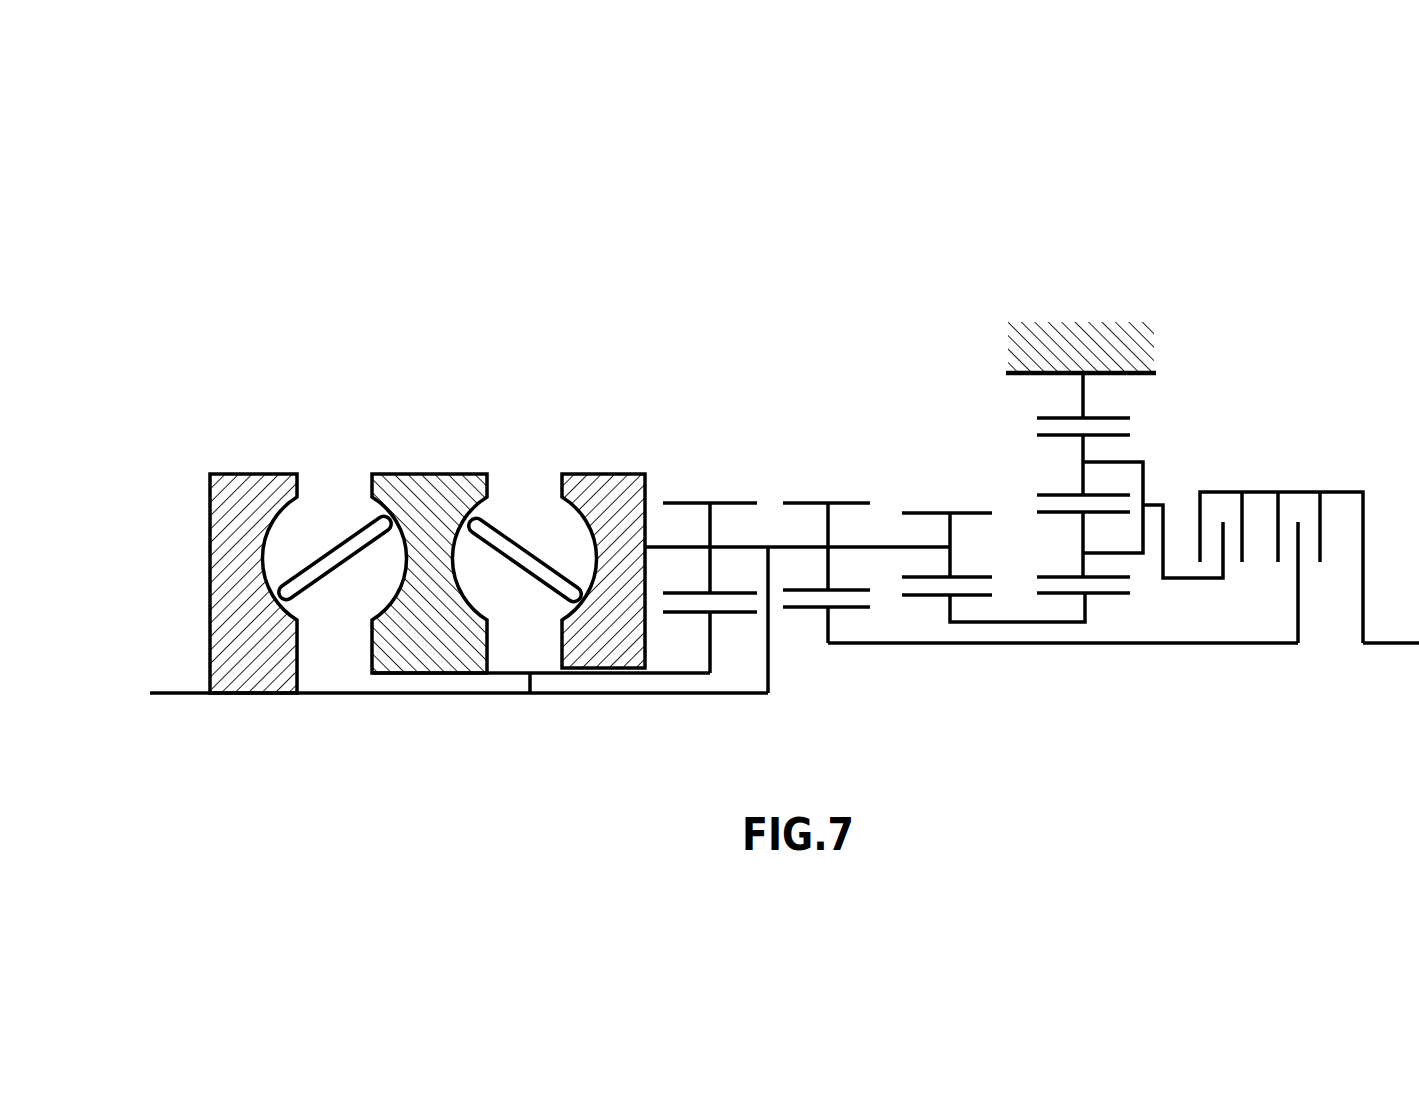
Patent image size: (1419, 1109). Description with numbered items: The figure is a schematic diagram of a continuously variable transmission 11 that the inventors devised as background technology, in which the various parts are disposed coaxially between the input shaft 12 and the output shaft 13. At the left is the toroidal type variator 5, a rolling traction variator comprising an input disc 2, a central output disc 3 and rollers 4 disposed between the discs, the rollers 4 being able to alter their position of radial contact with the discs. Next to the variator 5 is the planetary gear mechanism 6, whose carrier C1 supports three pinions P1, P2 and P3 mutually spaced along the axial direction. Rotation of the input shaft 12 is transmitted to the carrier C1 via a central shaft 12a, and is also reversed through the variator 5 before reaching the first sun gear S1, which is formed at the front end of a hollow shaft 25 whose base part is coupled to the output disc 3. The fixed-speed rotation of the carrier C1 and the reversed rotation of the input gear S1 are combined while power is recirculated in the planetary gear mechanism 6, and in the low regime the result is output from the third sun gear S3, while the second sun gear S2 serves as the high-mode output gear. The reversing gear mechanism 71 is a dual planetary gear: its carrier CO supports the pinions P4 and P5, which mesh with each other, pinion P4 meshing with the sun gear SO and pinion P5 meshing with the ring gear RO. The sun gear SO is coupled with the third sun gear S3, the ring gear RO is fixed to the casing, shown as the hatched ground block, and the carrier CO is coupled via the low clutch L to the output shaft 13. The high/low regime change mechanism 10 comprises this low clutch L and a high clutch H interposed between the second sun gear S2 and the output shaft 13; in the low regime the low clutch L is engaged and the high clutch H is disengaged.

The input disc 2 is at (258, 488).
The output disc 3 is at (427, 488).
The rollers 4 is at (358, 546).
The toroidal type variator 5 is at (614, 356).
The planetary gear mechanism 6 is at (828, 396).
The high/low regime change mechanism 10 is at (1281, 498).
The continuously variable transmission 11 is at (715, 325).
The input shaft 12 is at (183, 692).
The central shaft 12a is at (417, 694).
The output shaft 13 is at (1397, 642).
The hollow shaft 25 is at (532, 694).
The reversing gear mechanism 71 is at (1217, 382).
The pinion P1 is at (718, 502).
The pinion P2 is at (833, 502).
The pinion P3 is at (957, 512).
The pinion P4 is at (1072, 574).
The pinion P5 is at (1063, 438).
The carrier C1 is at (813, 545).
The first sun gear S1 is at (700, 613).
The second sun gear S2 is at (840, 609).
The third sun gear S3 is at (955, 597).
The ring gear RO is at (1110, 418).
The carrier CO is at (1113, 463).
The sun gear SO is at (1095, 596).
The low clutch L is at (1208, 490).
The high clutch H is at (1293, 492).